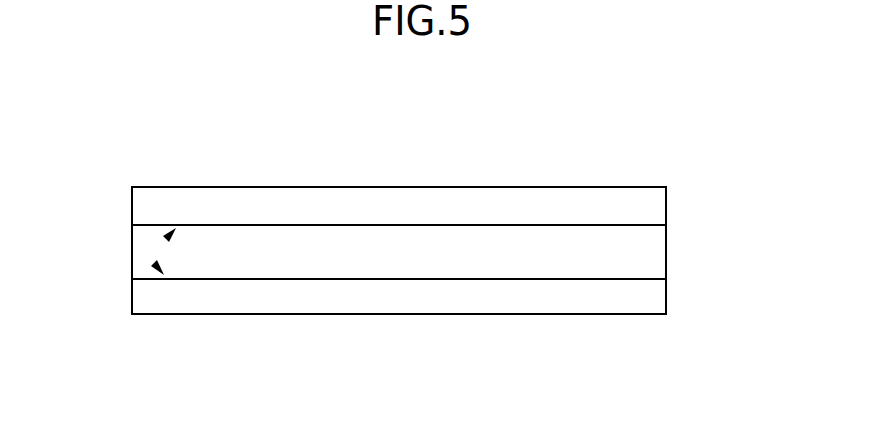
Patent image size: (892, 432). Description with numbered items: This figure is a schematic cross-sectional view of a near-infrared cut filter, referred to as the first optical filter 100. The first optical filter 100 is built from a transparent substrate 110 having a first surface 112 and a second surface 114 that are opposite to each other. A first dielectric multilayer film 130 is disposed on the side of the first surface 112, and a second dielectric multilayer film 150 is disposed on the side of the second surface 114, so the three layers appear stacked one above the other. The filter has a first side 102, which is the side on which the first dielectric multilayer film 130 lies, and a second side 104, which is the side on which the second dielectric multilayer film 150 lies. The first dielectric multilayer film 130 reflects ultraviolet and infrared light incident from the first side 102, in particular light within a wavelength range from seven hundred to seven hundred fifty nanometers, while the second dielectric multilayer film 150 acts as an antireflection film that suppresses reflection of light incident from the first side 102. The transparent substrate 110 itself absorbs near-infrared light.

The first optical filter 100 is at (762, 122).
The first side 102 is at (428, 150).
The second side 104 is at (428, 360).
The transparent substrate 110 is at (666, 251).
The first surface 112 is at (164, 240).
The second surface 114 is at (152, 262).
The first dielectric multilayer film 130 is at (666, 204).
The second dielectric multilayer film 150 is at (666, 295).